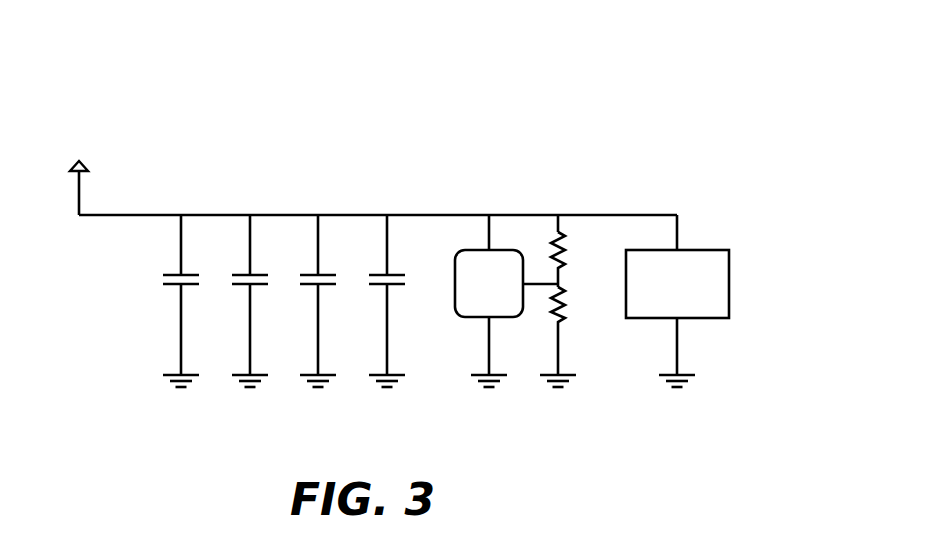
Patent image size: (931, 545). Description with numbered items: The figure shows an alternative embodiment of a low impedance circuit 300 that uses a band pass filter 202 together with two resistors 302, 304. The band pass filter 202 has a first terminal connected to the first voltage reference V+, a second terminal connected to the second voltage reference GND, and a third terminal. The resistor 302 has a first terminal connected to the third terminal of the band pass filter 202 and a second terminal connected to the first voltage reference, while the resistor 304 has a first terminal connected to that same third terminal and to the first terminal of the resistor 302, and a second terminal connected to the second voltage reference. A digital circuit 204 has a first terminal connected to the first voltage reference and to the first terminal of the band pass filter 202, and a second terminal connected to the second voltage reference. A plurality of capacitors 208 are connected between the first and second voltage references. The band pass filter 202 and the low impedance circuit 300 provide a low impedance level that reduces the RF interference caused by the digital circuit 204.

The low impedance circuit 300 is at (521, 106).
The capacitors 208 is at (163, 284).
The band pass filter 202 is at (455, 284).
The resistor 302 is at (557, 268).
The resistor 304 is at (557, 323).
The digital circuit 204 is at (729, 282).